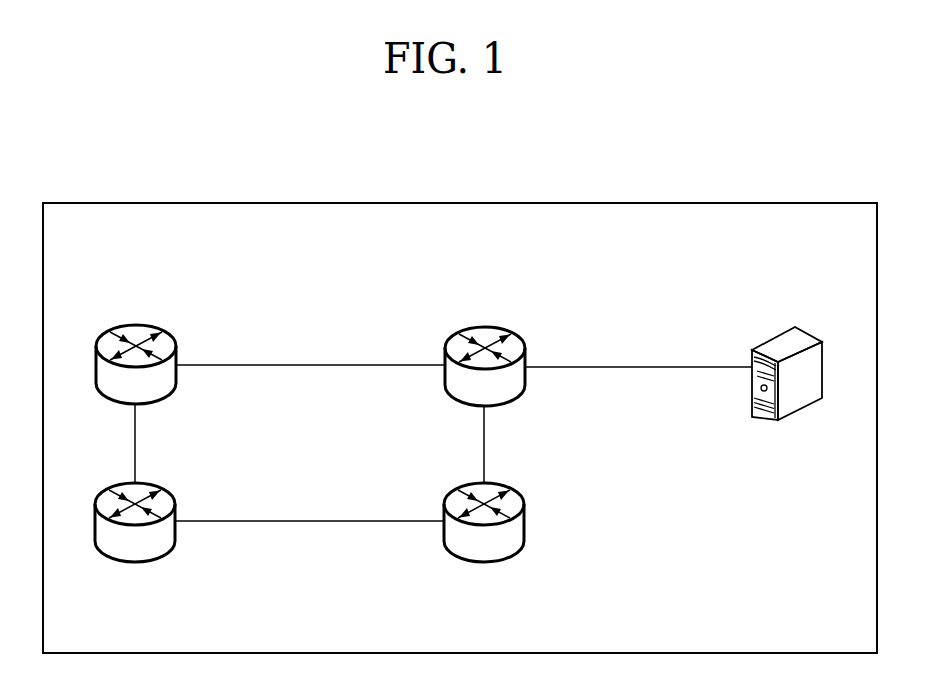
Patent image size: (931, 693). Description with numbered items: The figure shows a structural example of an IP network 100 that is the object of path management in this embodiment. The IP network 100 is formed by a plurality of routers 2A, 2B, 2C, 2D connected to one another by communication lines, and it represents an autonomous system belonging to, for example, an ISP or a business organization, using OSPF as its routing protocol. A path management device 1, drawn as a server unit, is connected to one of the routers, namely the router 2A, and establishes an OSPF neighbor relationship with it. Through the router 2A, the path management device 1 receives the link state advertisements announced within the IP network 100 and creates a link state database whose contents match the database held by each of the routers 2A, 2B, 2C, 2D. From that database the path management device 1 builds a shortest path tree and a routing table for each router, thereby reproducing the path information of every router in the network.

The IP network 100 is at (460, 428).
The path management device 1 is at (768, 420).
The router 2A is at (490, 325).
The router 2B is at (499, 482).
The router 2C is at (141, 323).
The router 2D is at (150, 482).